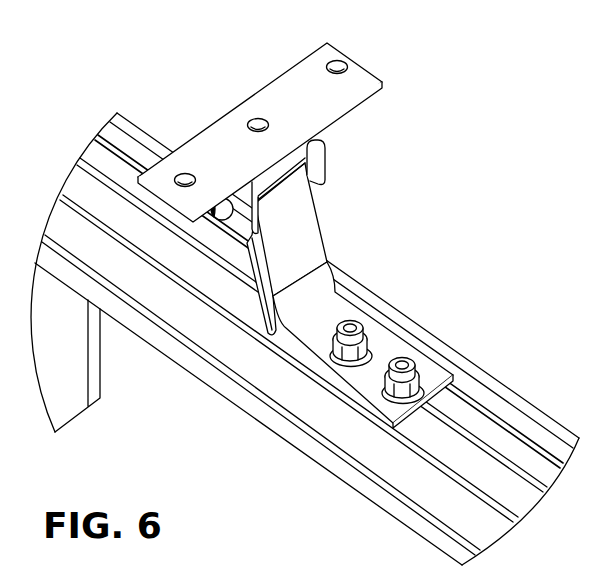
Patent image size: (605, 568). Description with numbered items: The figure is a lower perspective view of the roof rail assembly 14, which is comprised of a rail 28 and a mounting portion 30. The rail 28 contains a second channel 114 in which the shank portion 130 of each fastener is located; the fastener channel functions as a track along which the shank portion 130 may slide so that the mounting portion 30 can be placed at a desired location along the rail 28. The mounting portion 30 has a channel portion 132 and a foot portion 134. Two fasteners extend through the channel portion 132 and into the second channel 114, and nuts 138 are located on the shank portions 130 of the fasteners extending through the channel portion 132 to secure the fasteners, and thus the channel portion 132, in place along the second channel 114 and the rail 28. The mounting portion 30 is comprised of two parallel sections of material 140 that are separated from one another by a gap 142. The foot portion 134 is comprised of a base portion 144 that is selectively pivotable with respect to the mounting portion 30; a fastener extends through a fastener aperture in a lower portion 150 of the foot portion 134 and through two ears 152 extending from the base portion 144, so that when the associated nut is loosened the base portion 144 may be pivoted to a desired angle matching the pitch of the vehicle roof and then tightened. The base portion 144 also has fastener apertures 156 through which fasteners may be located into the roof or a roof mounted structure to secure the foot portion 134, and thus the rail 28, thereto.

The roof rail assembly 14 is at (139, 121).
The rail 28 is at (535, 407).
The mounting portion 30 is at (325, 248).
The second channel 114 is at (472, 443).
The shank portion 130 is at (402, 365).
The channel portion 132 is at (363, 392).
The foot portion 134 is at (318, 210).
The nuts 138 is at (388, 372).
The parallel sections of material 140 is at (258, 265).
The gap 142 is at (250, 298).
The base portion 144 is at (375, 82).
The lower portion 150 is at (316, 171).
The ears 152 is at (328, 141).
The fastener apertures 156 is at (338, 62).